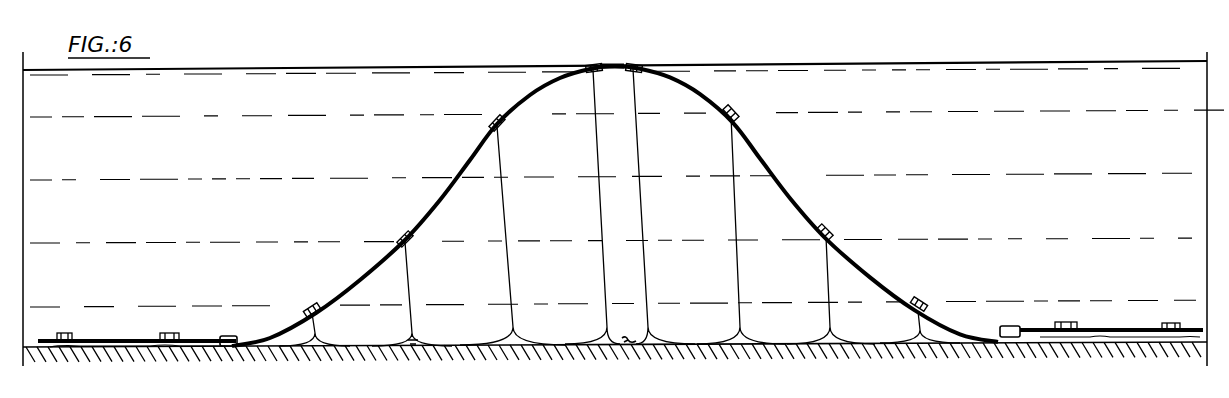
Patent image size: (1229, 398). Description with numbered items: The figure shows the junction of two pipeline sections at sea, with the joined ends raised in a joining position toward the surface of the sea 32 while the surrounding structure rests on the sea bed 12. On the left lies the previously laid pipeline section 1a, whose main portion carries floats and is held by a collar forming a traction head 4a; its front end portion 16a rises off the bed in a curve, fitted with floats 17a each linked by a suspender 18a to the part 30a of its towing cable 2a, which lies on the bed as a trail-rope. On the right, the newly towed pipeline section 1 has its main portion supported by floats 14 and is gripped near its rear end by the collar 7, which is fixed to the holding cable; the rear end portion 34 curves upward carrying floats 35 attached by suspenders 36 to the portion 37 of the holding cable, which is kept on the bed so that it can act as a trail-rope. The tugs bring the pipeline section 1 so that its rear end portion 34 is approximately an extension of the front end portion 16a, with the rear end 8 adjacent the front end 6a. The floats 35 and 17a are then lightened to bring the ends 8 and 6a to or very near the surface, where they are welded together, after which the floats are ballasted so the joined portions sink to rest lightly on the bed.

The pipeline section 1 is at (1134, 320).
The previously laid pipeline section 1a is at (197, 327).
The towing cable 2a is at (636, 328).
The traction head 4a is at (229, 336).
The front end 6a is at (610, 55).
The collar 7 is at (1008, 325).
The rear end 8 is at (627, 56).
The sea bed 12 is at (416, 344).
The floats 14 is at (1066, 322).
The front end portion 16a is at (464, 166).
The floats 17a is at (496, 121).
The suspenders 18a is at (600, 210).
The part of the cable 30a is at (517, 365).
The surface of the sea 32 is at (814, 62).
The rear end portion 34 is at (797, 192).
The floats 35 is at (635, 64).
The suspenders 36 is at (826, 256).
The portion of the holding cable 37 is at (777, 365).